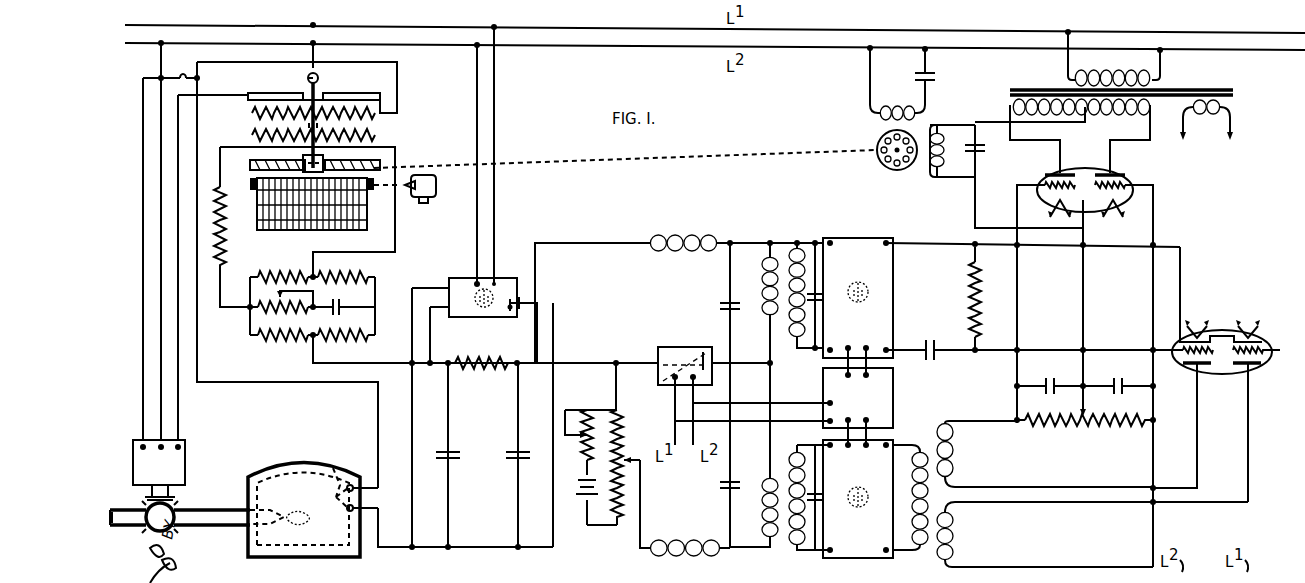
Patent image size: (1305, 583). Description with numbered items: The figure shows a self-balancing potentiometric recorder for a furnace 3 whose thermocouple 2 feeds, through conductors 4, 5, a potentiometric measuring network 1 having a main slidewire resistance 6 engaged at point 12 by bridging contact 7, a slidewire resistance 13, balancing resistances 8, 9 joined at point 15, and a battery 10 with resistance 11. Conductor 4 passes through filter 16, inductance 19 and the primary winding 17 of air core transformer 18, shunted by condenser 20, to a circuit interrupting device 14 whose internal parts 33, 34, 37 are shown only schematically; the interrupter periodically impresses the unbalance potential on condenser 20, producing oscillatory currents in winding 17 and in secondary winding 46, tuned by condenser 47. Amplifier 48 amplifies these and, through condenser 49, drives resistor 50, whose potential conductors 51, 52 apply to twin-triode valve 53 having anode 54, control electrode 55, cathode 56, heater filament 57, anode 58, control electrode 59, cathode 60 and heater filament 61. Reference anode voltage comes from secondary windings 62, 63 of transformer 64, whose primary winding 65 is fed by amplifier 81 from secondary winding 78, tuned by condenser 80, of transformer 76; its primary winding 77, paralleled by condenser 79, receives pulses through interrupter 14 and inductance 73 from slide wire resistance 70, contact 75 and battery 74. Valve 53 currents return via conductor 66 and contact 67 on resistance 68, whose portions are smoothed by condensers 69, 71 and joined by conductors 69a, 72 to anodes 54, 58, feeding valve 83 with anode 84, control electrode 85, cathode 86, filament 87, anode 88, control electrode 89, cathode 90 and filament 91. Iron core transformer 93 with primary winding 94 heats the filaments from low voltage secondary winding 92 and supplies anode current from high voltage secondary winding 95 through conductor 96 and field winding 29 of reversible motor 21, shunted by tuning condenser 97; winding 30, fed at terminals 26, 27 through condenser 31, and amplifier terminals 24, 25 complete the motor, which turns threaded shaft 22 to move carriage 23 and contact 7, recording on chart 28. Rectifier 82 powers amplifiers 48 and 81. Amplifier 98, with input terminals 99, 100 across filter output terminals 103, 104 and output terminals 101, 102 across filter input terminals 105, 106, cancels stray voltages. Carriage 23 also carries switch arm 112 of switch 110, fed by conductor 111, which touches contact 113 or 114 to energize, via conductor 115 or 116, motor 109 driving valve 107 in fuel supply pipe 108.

The potentiometric measuring network 1 is at (281, 272).
The thermocouple 2 is at (336, 468).
The furnace 3 is at (272, 455).
The conductor 4 is at (378, 547).
The conductor 5 is at (378, 420).
The main slidewire resistance 6 is at (252, 136).
The contact 7 is at (321, 133).
The balancing resistance 8 is at (266, 342).
The balancing resistance 9 is at (356, 342).
The battery 10 is at (338, 310).
The resistance 11 is at (278, 310).
The point 12 is at (310, 133).
The slidewire resistance 13 is at (250, 114).
The circuit interrupting device 14 is at (670, 347).
The point 15 is at (311, 340).
The filter 16 is at (485, 440).
The primary winding 17 is at (764, 271).
The air core transformer 18 is at (784, 240).
The inductance 19 is at (680, 254).
The condenser 20 is at (720, 306).
The reversible electrical motor 21 is at (897, 171).
The threaded shaft 22 is at (356, 168).
The carriage 23 is at (222, 184).
The terminal 24 is at (998, 122).
The terminal 25 is at (974, 194).
The terminal 26 is at (866, 42).
The terminal 27 is at (932, 56).
The recorder chart 28 is at (276, 230).
The winding 29 is at (942, 160).
The winding 30 is at (888, 108).
The condenser 31 is at (936, 86).
The relay contacts 33 is at (660, 381).
The relay armature 34 is at (686, 348).
The relay contact 37 is at (698, 348).
The secondary winding 46 is at (803, 244).
The condenser 47 is at (818, 299).
The electronic amplifier 48 is at (862, 238).
The condenser 49 is at (931, 338).
The resistor 50 is at (972, 288).
The conductor 51 is at (1039, 248).
The conductor 52 is at (1037, 348).
The heater type electronic valve 53 is at (1264, 330).
The anode 54 is at (1203, 380).
The control electrode 55 is at (1186, 354).
The cathode 56 is at (1180, 344).
The heater filament 57 is at (1196, 326).
The anode 58 is at (1256, 380).
The control electrode 59 is at (1268, 355).
The cathode 60 is at (1262, 342).
The heater filament 61 is at (1246, 326).
The secondary winding 62 is at (953, 449).
The secondary winding 63 is at (953, 528).
The air core transformer 64 is at (935, 556).
The primary winding 65 is at (912, 452).
The conductor 66 is at (1084, 290).
The contact 67 is at (1084, 406).
The resistance 68 is at (1089, 428).
The condenser 69 is at (1048, 386).
The conductor 69a is at (1048, 488).
The slide wire resistance 70 is at (624, 425).
The condenser 71 is at (1118, 386).
The conductor 72 is at (1078, 504).
The inductance 73 is at (676, 542).
The battery 74 is at (574, 483).
The contact 75 is at (626, 460).
The transformer 76 is at (778, 558).
The primary winding 77 is at (762, 525).
The secondary winding 78 is at (797, 554).
The condenser 79 is at (718, 486).
The condenser 80 is at (818, 494).
The electronic amplifier 81 is at (850, 561).
The rectifier 82 is at (893, 388).
The heater type electronic valve 83 is at (1136, 172).
The anode 84 is at (1048, 168).
The control electrode 85 is at (1045, 182).
The cathode 86 is at (1050, 212).
The heater type filament 87 is at (1054, 216).
The anode 88 is at (1114, 167).
The control electrode 89 is at (1138, 184).
The cathode 90 is at (1122, 212).
The heater type filament 91 is at (1122, 218).
The low voltage secondary winding 92 is at (1220, 122).
The iron core transformer 93 is at (1190, 92).
The line voltage primary winding 94 is at (1104, 72).
The high voltage secondary winding 95 is at (1132, 120).
The conductor 96 is at (974, 226).
The tuning condenser 97 is at (998, 140).
The electronic amplifier 98 is at (482, 352).
The input terminal 99 is at (582, 303).
The input terminal 100 is at (506, 325).
The output terminal 101 is at (461, 280).
The output terminal 102 is at (466, 323).
The output terminal 103 is at (520, 359).
The output terminal 104 is at (517, 547).
The input terminal 105 is at (426, 382).
The input terminal 106 is at (413, 547).
The valve 107 is at (177, 500).
The fuel supply pipe 108 is at (200, 510).
The reversible electrical motor 109 is at (185, 453).
The switch 110 is at (415, 91).
The conductor 111 is at (313, 59).
The switch arm 112 is at (305, 85).
The contact 113 is at (246, 93).
The contact 114 is at (390, 110).
The conductor 115 is at (185, 80).
The conductor 116 is at (328, 85).